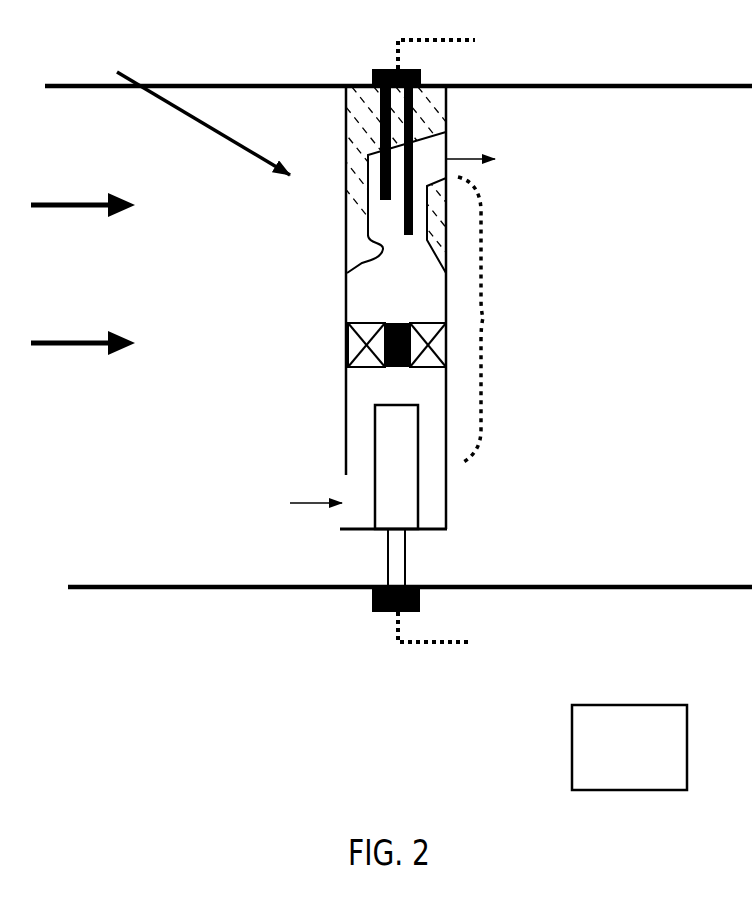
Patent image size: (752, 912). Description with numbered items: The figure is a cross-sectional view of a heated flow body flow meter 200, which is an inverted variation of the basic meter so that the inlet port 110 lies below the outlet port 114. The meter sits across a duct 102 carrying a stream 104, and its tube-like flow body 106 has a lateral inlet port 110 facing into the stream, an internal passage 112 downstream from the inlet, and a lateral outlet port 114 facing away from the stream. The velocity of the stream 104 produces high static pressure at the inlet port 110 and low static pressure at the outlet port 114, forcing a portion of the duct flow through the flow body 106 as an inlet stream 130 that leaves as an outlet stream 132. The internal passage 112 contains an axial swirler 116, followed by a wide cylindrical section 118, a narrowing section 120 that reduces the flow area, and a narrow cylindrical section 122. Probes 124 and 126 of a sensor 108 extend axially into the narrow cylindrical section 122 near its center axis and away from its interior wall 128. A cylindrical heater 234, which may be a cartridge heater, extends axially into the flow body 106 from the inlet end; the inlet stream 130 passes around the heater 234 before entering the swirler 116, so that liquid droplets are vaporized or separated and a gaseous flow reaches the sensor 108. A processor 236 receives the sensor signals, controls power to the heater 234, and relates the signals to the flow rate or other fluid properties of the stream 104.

The duct 102 is at (173, 590).
The stream 104 is at (60, 349).
The flow body 106 is at (368, 529).
The sensor 108 is at (371, 70).
The inlet port 110 is at (338, 512).
The internal passage 112 is at (497, 318).
The outlet port 114 is at (443, 150).
The axial swirler 116 is at (427, 353).
The wide cylindrical section 118 is at (400, 295).
The narrowing section 120 is at (400, 258).
The narrow cylindrical section 122 is at (392, 227).
The probe 124 is at (382, 190).
The probe 126 is at (415, 222).
The interior wall 128 is at (365, 258).
The inlet stream 130 is at (340, 503).
The outlet stream 132 is at (468, 159).
The heated flow body flow meter 200 is at (193, 109).
The cylindrical heater 234 is at (375, 437).
The processor 236 is at (572, 748).